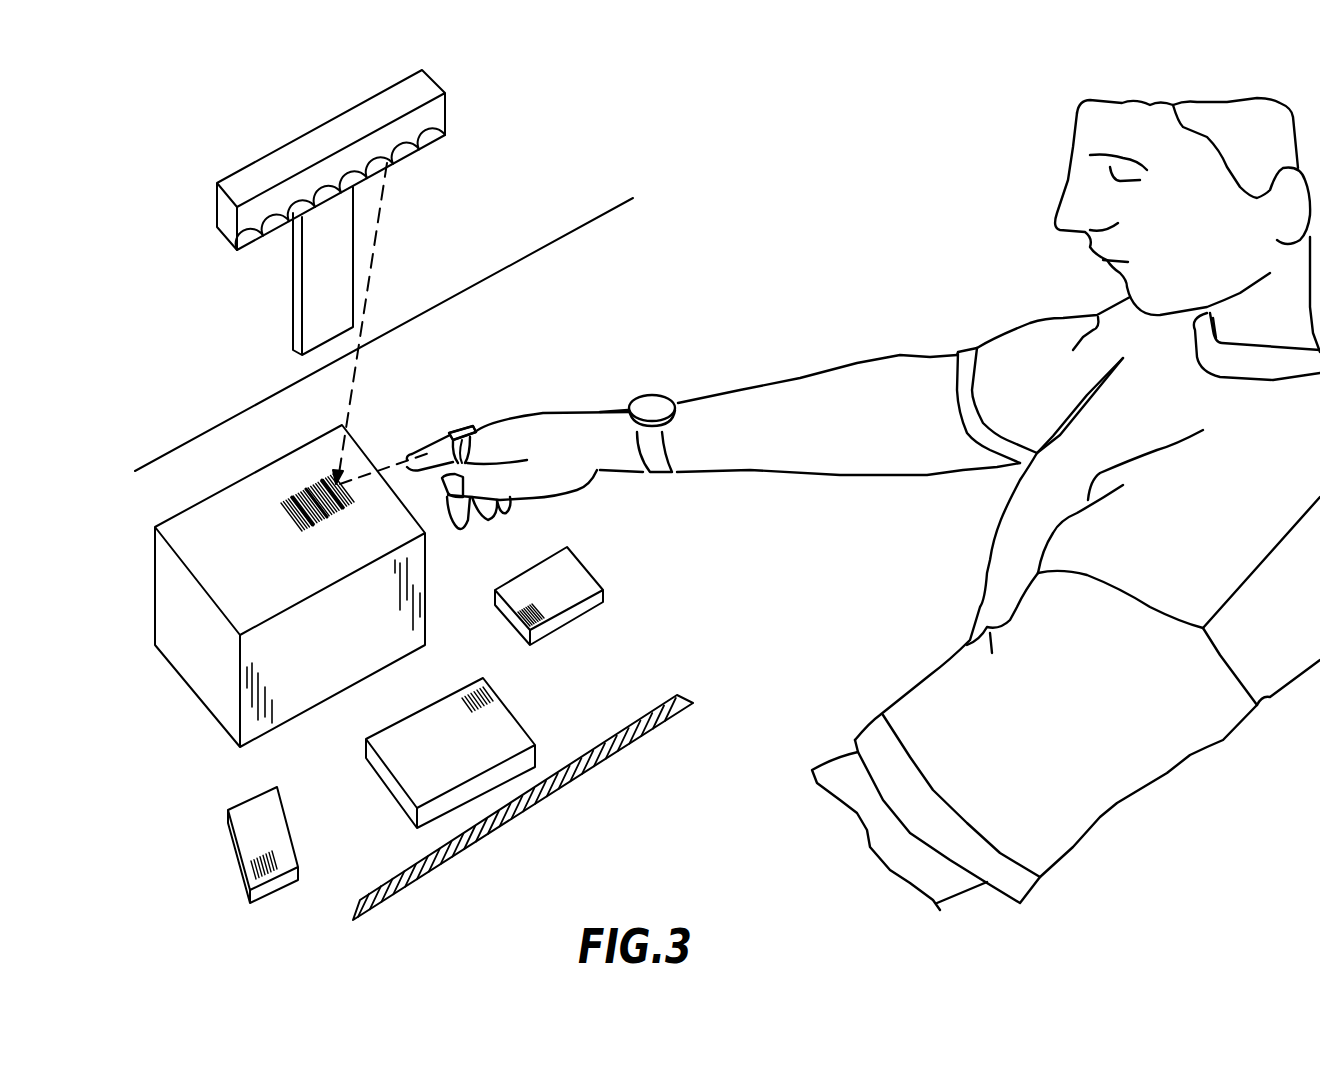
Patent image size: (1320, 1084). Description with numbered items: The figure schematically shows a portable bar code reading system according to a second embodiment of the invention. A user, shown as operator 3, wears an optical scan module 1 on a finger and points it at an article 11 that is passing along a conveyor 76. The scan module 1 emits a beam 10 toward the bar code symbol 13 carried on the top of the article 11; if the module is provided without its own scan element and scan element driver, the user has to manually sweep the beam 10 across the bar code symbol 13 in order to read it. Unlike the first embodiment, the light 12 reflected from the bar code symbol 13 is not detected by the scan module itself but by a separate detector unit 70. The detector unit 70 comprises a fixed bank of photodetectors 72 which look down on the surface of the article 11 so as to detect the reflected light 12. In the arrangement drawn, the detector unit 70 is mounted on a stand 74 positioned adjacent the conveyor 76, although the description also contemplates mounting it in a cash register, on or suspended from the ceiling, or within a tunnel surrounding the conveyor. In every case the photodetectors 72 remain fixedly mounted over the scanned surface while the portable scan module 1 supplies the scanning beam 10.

The optical scan module 1 is at (462, 428).
The operator 3 is at (1017, 314).
The beam 10 is at (367, 478).
The article 11 is at (327, 586).
The light 12 is at (370, 272).
The bar code symbol 13 is at (322, 527).
The detector unit 70 is at (296, 196).
The photodetectors 72 is at (270, 232).
The stand 74 is at (293, 317).
The conveyor 76 is at (598, 322).